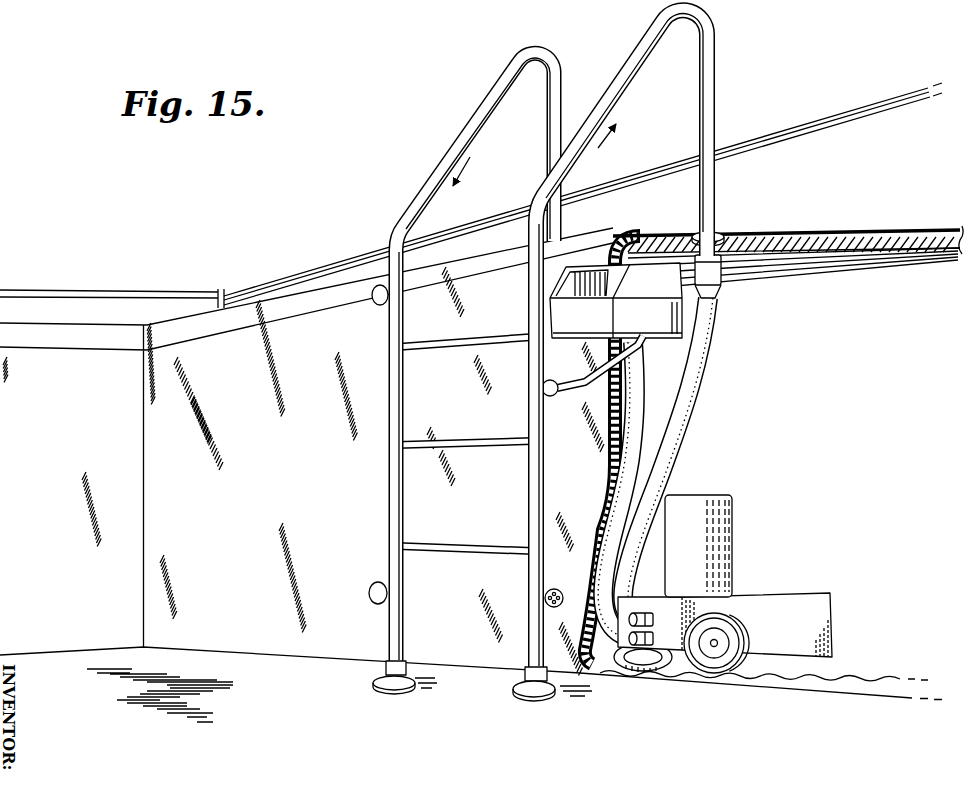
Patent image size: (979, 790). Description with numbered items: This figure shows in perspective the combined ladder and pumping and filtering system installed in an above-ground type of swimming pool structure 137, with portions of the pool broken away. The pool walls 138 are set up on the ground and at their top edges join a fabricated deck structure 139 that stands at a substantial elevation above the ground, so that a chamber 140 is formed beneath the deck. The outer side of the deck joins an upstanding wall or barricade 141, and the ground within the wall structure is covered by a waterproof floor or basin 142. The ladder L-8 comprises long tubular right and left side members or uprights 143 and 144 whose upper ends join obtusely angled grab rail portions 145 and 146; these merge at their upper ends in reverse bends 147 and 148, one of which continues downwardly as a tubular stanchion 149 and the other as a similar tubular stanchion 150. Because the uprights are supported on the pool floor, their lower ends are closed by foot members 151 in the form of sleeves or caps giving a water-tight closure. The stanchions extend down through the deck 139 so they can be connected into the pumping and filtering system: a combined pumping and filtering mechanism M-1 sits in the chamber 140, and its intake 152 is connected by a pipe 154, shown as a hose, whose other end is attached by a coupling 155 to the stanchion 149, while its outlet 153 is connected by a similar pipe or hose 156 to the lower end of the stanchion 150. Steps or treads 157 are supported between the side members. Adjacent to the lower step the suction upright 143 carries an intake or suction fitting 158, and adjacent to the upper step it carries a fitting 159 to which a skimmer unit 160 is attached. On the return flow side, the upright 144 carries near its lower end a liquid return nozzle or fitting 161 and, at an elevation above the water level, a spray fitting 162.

The pool structure 137 is at (278, 296).
The pool walls 138 is at (43, 330).
The fabricated deck structure 139 is at (795, 216).
The chamber 140 is at (858, 273).
The upstanding wall or barricade 141 is at (875, 108).
The waterproof floor or basin 142 is at (833, 705).
The right side member or upright 143 is at (527, 483).
The left side member or upright 144 is at (388, 498).
The grab rail portion 145 is at (643, 33).
The grab rail portion 146 is at (473, 115).
The reverse bend 147 is at (717, 18).
The reverse bend 148 is at (518, 52).
The tubular stanchion 149 is at (717, 57).
The tubular stanchion 150 is at (545, 144).
The foot members 151 is at (380, 675).
The intake 152 is at (637, 648).
The outlet 153 is at (656, 588).
The pipe 154 is at (675, 453).
The coupling 155 is at (716, 283).
The pipe or hose 156 is at (606, 512).
The steps or treads 157 is at (437, 551).
The intake or suction fitting 158 is at (583, 578).
The fitting 159 is at (551, 397).
The skimmer unit 160 is at (678, 341).
The liquid return nozzle or fitting 161 is at (372, 588).
The spray fitting 162 is at (371, 295).
The ladder L-8 is at (500, 60).
The combined pumping and filtering mechanism M-1 is at (789, 588).